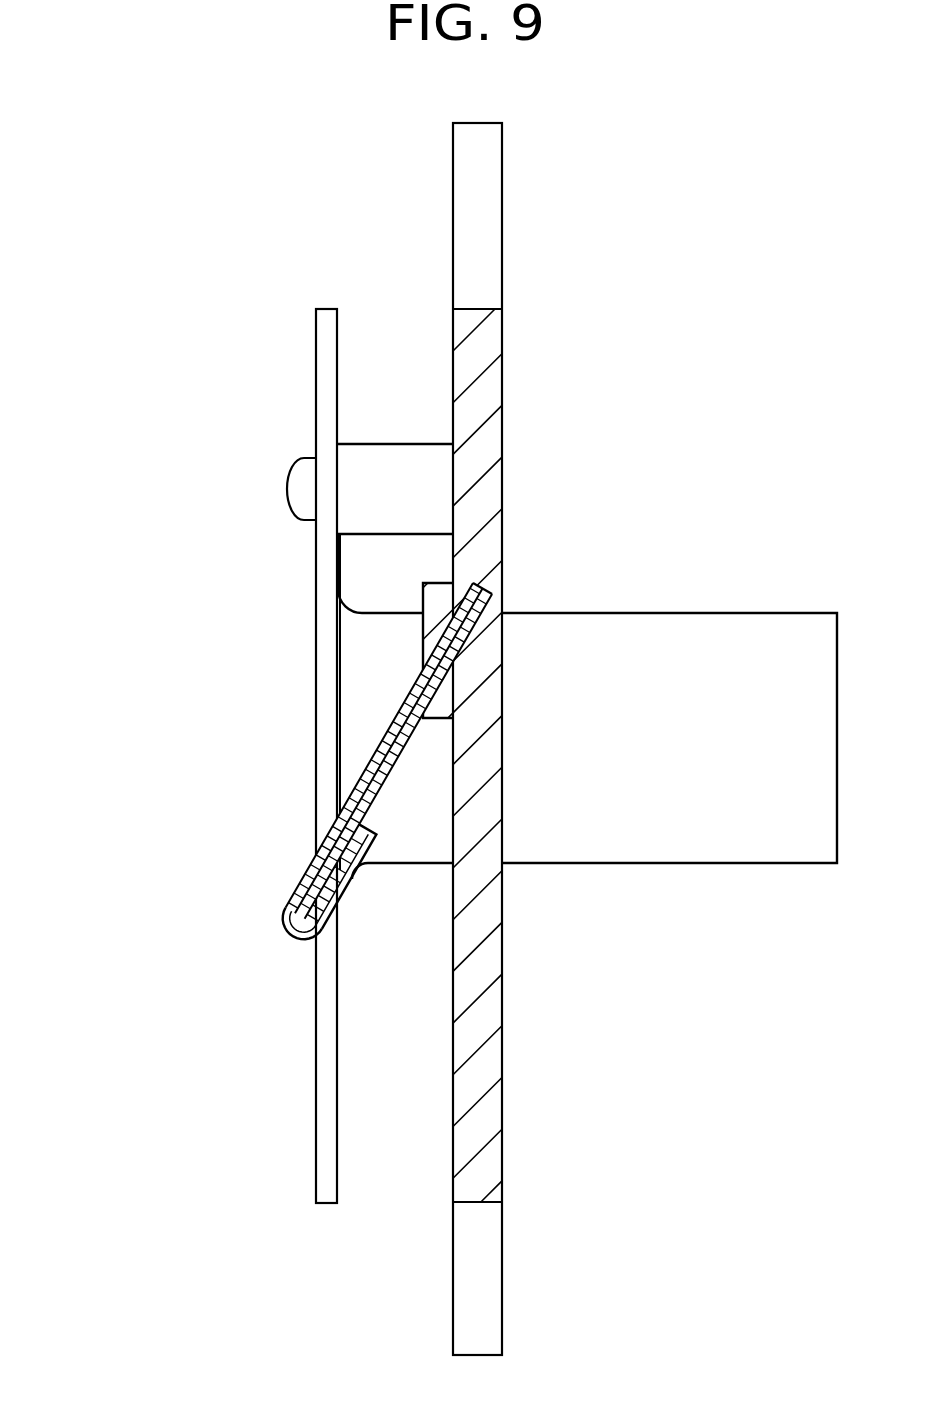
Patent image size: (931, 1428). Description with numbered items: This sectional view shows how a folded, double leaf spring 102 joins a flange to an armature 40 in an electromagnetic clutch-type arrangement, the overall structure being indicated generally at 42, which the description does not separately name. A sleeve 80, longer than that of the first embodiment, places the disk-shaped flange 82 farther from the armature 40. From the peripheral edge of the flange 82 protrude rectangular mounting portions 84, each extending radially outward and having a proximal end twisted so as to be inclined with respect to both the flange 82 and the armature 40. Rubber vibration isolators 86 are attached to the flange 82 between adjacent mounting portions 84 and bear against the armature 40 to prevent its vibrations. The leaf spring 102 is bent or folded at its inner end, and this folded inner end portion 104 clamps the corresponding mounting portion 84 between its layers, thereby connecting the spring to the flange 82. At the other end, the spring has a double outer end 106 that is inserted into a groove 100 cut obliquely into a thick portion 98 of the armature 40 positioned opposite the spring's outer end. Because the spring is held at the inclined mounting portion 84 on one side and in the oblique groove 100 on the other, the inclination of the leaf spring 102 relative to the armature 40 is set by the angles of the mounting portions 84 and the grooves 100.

The armature 40 is at (490, 380).
The clamping assembly 42 is at (174, 560).
The sleeve 80 is at (682, 843).
The flange 82 is at (328, 378).
The mounting portion 84 is at (302, 870).
The rubber vibration isolator 86 is at (365, 480).
The thick portion 98 is at (425, 627).
The groove 100 is at (425, 627).
The leaf spring 102 is at (378, 752).
The folded inner end portion 104 is at (285, 940).
The double outer end 106 is at (478, 585).